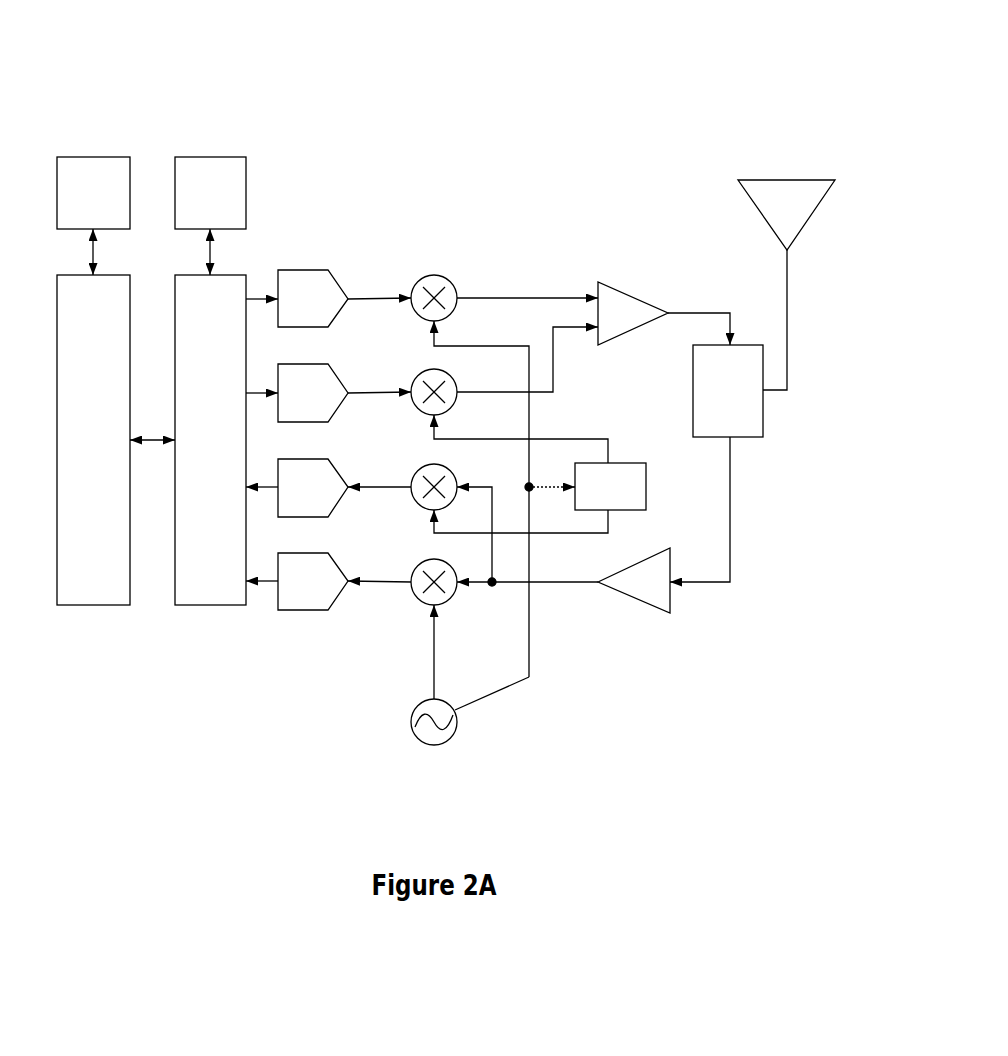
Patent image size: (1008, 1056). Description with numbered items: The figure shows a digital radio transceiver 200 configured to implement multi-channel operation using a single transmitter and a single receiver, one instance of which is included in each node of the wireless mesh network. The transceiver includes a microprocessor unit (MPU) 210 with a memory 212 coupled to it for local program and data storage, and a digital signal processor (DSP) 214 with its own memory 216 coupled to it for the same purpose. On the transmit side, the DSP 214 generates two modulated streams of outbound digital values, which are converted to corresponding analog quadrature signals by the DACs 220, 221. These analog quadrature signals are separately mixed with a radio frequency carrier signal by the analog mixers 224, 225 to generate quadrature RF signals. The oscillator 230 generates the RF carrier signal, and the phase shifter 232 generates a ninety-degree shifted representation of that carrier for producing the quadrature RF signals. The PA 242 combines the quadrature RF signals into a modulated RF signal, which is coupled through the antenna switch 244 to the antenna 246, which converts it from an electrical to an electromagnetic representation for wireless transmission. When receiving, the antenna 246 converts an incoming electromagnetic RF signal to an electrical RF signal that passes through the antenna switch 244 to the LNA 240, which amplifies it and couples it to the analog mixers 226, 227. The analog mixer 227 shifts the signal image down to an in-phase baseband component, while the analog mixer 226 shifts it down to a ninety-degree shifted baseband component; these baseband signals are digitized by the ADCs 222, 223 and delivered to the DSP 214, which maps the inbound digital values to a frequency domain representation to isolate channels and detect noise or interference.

The digital radio transceiver 200 is at (633, 75).
The microprocessor unit (MPU) 210 is at (74, 462).
The memory 212 is at (74, 216).
The digital signal processor (DSP) 214 is at (191, 462).
The memory 216 is at (191, 216).
The digital to analog converter (DAC) 220 is at (284, 322).
The digital to analog converter (DAC) 221 is at (284, 416).
The analog to digital converter (ADC) 222 is at (284, 508).
The analog to digital converter (ADC) 223 is at (284, 603).
The analog mixer 224 is at (420, 275).
The analog mixer 225 is at (420, 370).
The analog mixer 226 is at (416, 466).
The analog mixer 227 is at (416, 560).
The oscillator 230 is at (413, 714).
The phase shifter 232 is at (593, 498).
The low noise amplifier (LNA) 240 is at (651, 606).
The power amplifier (PA) 242 is at (614, 285).
The antenna switch 244 is at (711, 404).
The antenna 246 is at (762, 220).